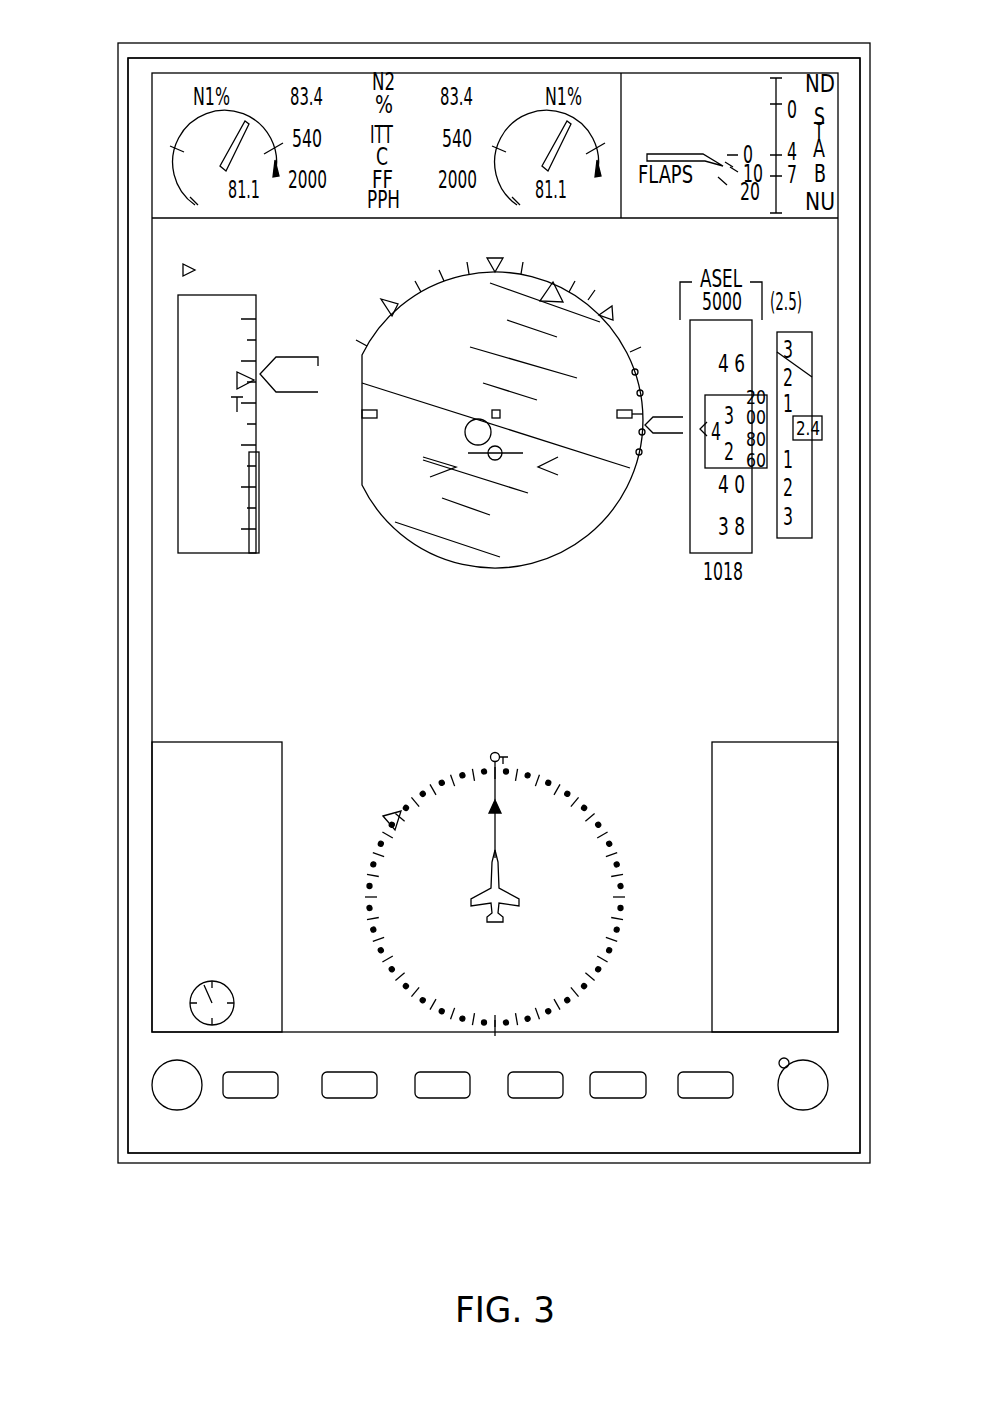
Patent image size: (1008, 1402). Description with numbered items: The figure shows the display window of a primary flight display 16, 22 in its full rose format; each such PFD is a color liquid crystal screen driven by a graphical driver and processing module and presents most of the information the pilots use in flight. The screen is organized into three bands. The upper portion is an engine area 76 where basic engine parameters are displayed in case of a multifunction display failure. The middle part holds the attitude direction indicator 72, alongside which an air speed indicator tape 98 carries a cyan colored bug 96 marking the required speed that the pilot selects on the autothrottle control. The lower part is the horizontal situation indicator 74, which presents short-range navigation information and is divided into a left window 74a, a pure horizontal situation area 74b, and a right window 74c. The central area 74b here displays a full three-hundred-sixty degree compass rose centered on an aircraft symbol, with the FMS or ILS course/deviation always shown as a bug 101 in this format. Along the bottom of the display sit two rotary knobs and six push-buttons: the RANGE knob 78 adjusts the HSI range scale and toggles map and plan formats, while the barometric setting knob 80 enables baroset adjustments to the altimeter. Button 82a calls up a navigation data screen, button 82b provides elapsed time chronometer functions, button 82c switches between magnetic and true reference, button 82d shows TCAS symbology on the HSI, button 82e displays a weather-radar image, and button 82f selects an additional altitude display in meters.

The primary flight display 16 is at (457, 605).
The primary flight display 22 is at (457, 605).
The attitude direction indicator 72 is at (874, 395).
The horizontal situation indicator 74 is at (873, 812).
The left window 74a is at (150, 960).
The pure horizontal situation area 74b is at (495, 1036).
The right window 74c is at (830, 993).
The engine area 76 is at (504, 43).
The RANGE rotary knob 78 is at (175, 1110).
The barometric setting knob 80 is at (827, 1073).
The NAV DATA button 82a is at (255, 1098).
The ET button 82b is at (350, 1098).
The MAG/TRU button 82c is at (440, 1098).
The TCAS button 82d is at (535, 1098).
The RADAR button 82e is at (612, 1098).
The M/Ft button 82f is at (700, 1098).
The bug 96 is at (238, 380).
The air speed indicator tape 98 is at (190, 536).
The bug 101 is at (497, 740).